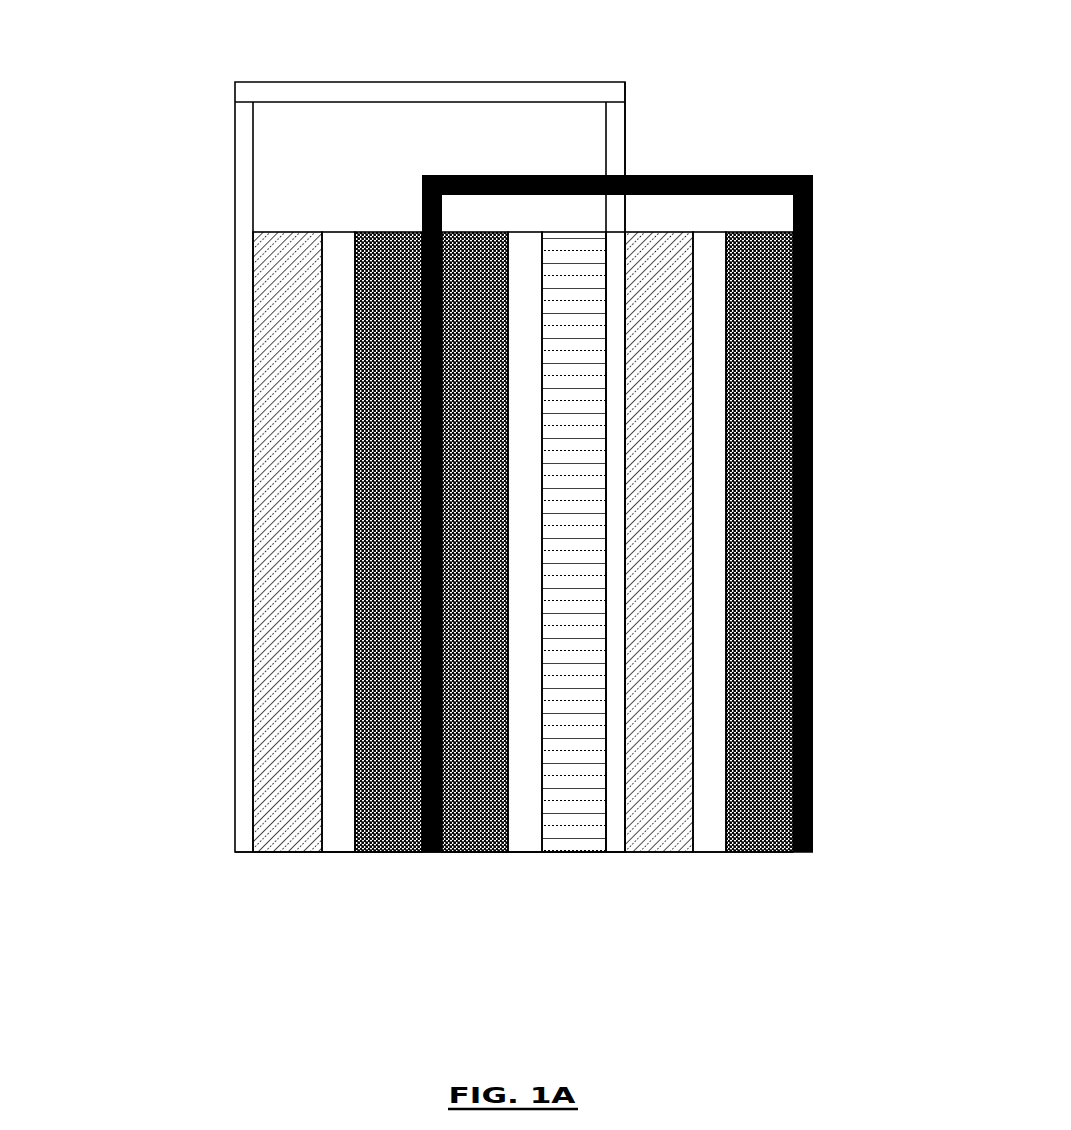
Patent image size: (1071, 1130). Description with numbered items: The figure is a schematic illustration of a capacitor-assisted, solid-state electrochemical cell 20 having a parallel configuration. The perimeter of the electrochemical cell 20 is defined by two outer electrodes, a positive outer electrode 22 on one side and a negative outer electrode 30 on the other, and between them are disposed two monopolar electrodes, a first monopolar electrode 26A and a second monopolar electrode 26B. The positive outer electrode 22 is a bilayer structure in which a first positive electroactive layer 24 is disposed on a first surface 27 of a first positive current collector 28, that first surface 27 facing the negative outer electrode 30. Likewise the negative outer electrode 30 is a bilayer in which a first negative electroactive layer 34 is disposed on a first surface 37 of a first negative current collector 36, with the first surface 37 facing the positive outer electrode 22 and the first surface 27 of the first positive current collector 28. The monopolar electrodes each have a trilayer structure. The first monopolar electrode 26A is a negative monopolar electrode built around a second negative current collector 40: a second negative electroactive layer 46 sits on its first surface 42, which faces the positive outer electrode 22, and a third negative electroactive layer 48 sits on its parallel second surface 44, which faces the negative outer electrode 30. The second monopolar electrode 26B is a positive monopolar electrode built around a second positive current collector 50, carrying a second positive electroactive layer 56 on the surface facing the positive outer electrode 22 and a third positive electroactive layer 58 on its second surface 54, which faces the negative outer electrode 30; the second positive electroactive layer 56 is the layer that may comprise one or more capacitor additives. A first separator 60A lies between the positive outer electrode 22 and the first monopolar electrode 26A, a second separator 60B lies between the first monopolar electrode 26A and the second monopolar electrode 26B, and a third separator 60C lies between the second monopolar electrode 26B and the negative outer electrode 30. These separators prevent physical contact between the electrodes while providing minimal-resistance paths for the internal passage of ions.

The electrochemical cell 20 is at (155, 43).
The positive outer electrode 22 is at (322, 858).
The first positive electroactive layer 24 is at (287, 232).
The first monopolar electrode 26A is at (508, 858).
The second monopolar electrode 26B is at (695, 858).
The first surface of the first positive current collector 27 is at (253, 720).
The first positive current collector 28 is at (235, 467).
The negative outer electrode 30 is at (726, 858).
The first negative electroactive layer 34 is at (760, 232).
The first negative current collector 36 is at (813, 514).
The first surface of the first negative current collector 37 is at (793, 285).
The second negative current collector 40 is at (422, 313).
The first surface of the second negative current collector 42 is at (421, 210).
The second surface of the second negative current collector 44 is at (458, 248).
The second negative electroactive layer 46 is at (383, 232).
The third negative electroactive layer 48 is at (488, 232).
The second positive current collector 50 is at (626, 128).
The second surface of the second positive current collector 54 is at (605, 467).
The second positive electroactive layer 56 is at (577, 232).
The third positive electroactive layer 58 is at (663, 232).
The first separator 60A is at (340, 852).
The second separator 60B is at (525, 852).
The third separator 60C is at (711, 852).